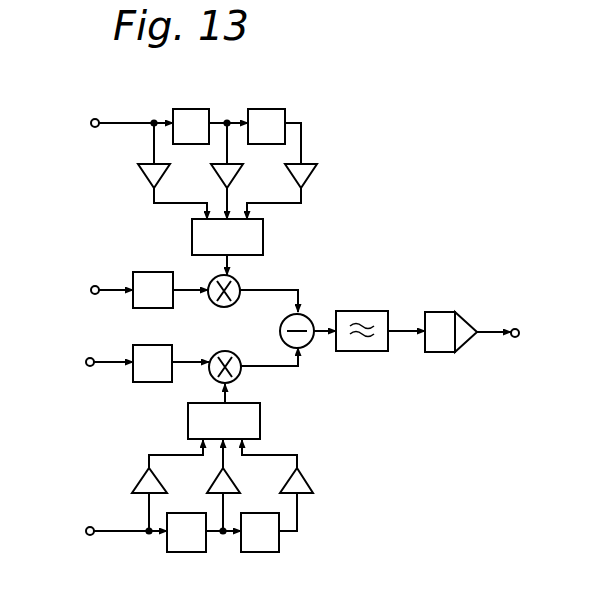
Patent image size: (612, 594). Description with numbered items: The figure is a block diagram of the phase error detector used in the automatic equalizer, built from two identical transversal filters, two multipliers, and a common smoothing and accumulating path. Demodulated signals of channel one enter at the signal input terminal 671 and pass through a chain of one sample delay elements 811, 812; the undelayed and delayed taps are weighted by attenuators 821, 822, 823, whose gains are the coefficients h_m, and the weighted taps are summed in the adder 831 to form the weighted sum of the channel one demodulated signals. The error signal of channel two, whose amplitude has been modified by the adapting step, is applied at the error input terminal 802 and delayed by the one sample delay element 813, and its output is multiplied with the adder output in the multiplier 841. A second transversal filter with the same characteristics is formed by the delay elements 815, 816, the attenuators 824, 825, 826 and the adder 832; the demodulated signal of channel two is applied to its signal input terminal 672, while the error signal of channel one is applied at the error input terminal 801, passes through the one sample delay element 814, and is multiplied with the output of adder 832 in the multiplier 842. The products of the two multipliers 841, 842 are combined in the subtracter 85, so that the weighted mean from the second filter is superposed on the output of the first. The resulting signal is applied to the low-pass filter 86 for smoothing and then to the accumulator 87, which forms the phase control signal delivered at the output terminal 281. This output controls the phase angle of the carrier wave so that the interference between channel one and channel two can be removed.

The signal input terminal 671 is at (91, 123).
The signal input terminal 672 is at (87, 531).
The error input terminal 801 is at (86, 362).
The error input terminal 802 is at (90, 290).
The one sample delay element 811 is at (195, 109).
The one sample delay element 812 is at (279, 109).
The one sample delay element 813 is at (145, 272).
The one sample delay element 814 is at (147, 345).
The one sample delay element 815 is at (186, 552).
The one sample delay element 816 is at (261, 552).
The attenuator 821 is at (146, 187).
The attenuator 822 is at (217, 172).
The attenuator 823 is at (290, 172).
The attenuator 824 is at (135, 480).
The attenuator 825 is at (218, 480).
The attenuator 826 is at (292, 480).
The adder 831 is at (263, 240).
The adder 832 is at (260, 420).
The multiplier 841 is at (236, 300).
The multiplier 842 is at (237, 355).
The subtracter 85 is at (308, 344).
The low-pass filter 86 is at (368, 311).
The accumulator 87 is at (448, 312).
The output terminal 281 is at (516, 328).